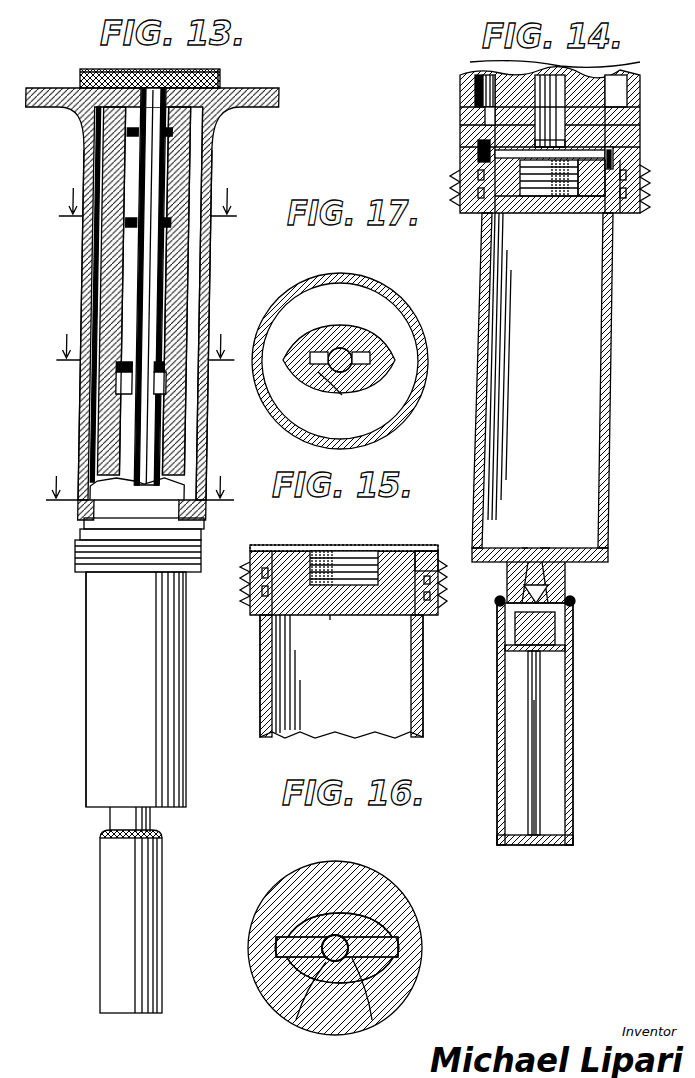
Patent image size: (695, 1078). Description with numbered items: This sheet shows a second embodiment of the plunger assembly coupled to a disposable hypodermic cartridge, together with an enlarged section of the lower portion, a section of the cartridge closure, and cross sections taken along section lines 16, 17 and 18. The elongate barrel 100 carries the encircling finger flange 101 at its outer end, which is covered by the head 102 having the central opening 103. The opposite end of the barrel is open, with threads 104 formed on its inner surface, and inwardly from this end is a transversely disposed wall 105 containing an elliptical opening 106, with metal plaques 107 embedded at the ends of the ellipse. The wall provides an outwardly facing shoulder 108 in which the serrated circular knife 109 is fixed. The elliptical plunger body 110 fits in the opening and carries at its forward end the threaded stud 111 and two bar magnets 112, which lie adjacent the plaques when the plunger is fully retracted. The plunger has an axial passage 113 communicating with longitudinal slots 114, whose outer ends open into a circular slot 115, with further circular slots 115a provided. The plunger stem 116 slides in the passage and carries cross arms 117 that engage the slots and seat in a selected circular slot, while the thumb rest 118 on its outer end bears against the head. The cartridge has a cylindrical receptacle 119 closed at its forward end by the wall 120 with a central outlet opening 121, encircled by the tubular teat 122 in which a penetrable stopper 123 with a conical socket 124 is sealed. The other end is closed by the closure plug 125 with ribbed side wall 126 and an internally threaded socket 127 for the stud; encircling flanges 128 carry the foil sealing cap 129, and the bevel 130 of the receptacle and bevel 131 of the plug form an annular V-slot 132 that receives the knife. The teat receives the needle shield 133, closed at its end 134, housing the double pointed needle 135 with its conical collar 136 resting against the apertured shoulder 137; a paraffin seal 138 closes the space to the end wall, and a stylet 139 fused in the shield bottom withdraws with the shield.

In FIG. 13, the barrel 100 is at (222, 262).
In FIG. 17, the barrel 100 is at (368, 280).
In FIG. 16, the barrel 100 is at (391, 876).
In FIG. 14, the barrel 100 is at (650, 78).
In FIG. 13, the finger flange 101 is at (278, 104).
In FIG. 13, the head 102 is at (185, 69).
In FIG. 13, the central opening 103 is at (130, 69).
In FIG. 13, the threads 104 is at (90, 585).
In FIG. 13, the transversely disposed wall 105 is at (200, 472).
In FIG. 14, the transversely disposed wall 105 is at (630, 100).
In FIG. 13, the elliptical opening 106 is at (94, 488).
In FIG. 13, the metal plaques 107 is at (84, 504).
In FIG. 16, the metal plaques 107 is at (405, 945).
In FIG. 14, the metal plaques 107 is at (484, 110).
In FIG. 13, the shoulder 108 is at (88, 526).
In FIG. 14, the shoulder 108 is at (635, 126).
In FIG. 13, the circular knife 109 is at (84, 538).
In FIG. 14, the circular knife 109 is at (480, 145).
In FIG. 13, the plunger body 110 is at (174, 422).
In FIG. 17, the plunger body 110 is at (345, 330).
In FIG. 16, the plunger body 110 is at (372, 922).
In FIG. 14, the plunger body 110 is at (482, 90).
In FIG. 14, the threaded stud 111 is at (548, 200).
In FIG. 16, the bar magnets 112 is at (285, 932).
In FIG. 14, the bar magnets 112 is at (606, 72).
In FIG. 13, the axial passage 113 is at (186, 290).
In FIG. 17, the axial passage 113 is at (336, 395).
In FIG. 16, the axial passage 113 is at (315, 1000).
In FIG. 14, the axial passage 113 is at (478, 78).
In FIG. 13, the slots 114 is at (165, 246).
In FIG. 13, the circular slot 115 is at (172, 132).
In FIG. 13, the circular slots 115a is at (118, 224).
In FIG. 13, the plunger stem 116 is at (156, 320).
In FIG. 17, the plunger stem 116 is at (360, 385).
In FIG. 16, the plunger stem 116 is at (364, 1025).
In FIG. 14, the plunger stem 116 is at (520, 64).
In FIG. 13, the cross arms 117 is at (112, 368).
In FIG. 17, the cross arms 117 is at (360, 352).
In FIG. 13, the thumb rest 118 is at (220, 80).
In FIG. 13, the cylindrical receptacle 119 is at (96, 690).
In FIG. 15, the cylindrical receptacle 119 is at (262, 700).
In FIG. 14, the cylindrical receptacle 119 is at (614, 348).
In FIG. 14, the wall 120 is at (607, 548).
In FIG. 14, the central outlet opening 121 is at (544, 546).
In FIG. 14, the tubular teat 122 is at (566, 594).
In FIG. 14, the stopper 123 is at (524, 546).
In FIG. 14, the conical socket 124 is at (566, 580).
In FIG. 15, the closure plug 125 is at (292, 618).
In FIG. 14, the closure plug 125 is at (576, 215).
In FIG. 15, the ribbed side wall 126 is at (392, 617).
In FIG. 14, the ribbed side wall 126 is at (466, 185).
In FIG. 15, the internally threaded socket 127 is at (372, 560).
In FIG. 14, the internally threaded socket 127 is at (516, 215).
In FIG. 15, the encircling flanges 128 is at (444, 606).
In FIG. 14, the encircling flanges 128 is at (641, 165).
In FIG. 13, the sealing cap 129 is at (80, 558).
In FIG. 15, the sealing cap 129 is at (246, 587).
In FIG. 14, the sealing cap 129 is at (644, 186).
In FIG. 15, the bevel 130 is at (272, 545).
In FIG. 14, the bevel 130 is at (494, 154).
In FIG. 15, the bevel 131 is at (278, 545).
In FIG. 14, the bevel 131 is at (612, 152).
In FIG. 15, the annular V-slot 132 is at (418, 548).
In FIG. 13, the needle shield 133 is at (162, 900).
In FIG. 14, the needle shield 133 is at (574, 730).
In FIG. 14, the closed end 134 is at (536, 846).
In FIG. 14, the double pointed needle 135 is at (541, 712).
In FIG. 14, the conical collar 136 is at (558, 636).
In FIG. 14, the centrally apertured shoulder 137 is at (556, 657).
In FIG. 13, the paraffin seal 138 is at (165, 835).
In FIG. 14, the paraffin seal 138 is at (575, 604).
In FIG. 14, the stylet 139 is at (540, 822).
In FIG. 13, the section line 16— 16 is at (140, 479).
In FIG. 13, the section line 17— 17 is at (145, 338).
In FIG. 13, the section line 18— 18 is at (148, 193).